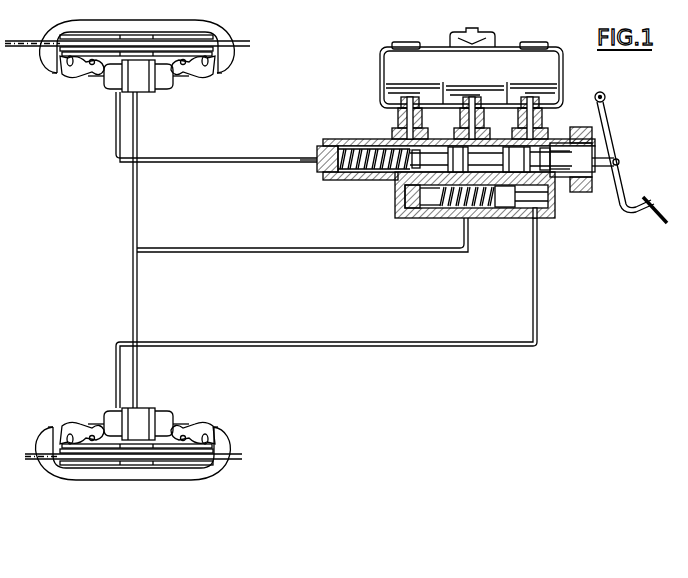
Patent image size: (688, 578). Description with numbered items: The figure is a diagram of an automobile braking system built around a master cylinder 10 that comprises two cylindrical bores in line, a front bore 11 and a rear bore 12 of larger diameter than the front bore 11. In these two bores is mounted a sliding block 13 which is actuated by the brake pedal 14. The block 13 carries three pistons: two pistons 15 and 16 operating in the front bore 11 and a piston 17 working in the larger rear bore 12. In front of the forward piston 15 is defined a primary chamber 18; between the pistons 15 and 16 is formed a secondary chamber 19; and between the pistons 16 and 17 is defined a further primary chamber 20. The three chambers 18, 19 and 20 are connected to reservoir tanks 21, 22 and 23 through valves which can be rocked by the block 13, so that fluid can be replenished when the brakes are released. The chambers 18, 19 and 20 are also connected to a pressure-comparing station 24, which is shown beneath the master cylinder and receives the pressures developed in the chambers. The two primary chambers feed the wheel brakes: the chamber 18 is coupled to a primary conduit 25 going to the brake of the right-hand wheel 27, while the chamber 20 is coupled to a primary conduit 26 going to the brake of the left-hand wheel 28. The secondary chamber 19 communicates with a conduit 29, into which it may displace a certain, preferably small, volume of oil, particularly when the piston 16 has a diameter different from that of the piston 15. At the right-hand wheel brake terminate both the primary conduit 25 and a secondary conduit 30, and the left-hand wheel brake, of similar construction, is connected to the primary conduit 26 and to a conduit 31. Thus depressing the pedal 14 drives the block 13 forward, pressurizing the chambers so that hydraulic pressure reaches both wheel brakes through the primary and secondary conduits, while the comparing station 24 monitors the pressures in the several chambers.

The master cylinder 10 is at (333, 140).
The front bore 11 is at (352, 180).
The rear bore 12 is at (557, 185).
The sliding block 13 is at (598, 178).
The brake pedal 14 is at (646, 203).
The forward piston 15 is at (456, 147).
The piston 16 is at (514, 147).
The piston 17 is at (585, 150).
The primary chamber 18 is at (378, 180).
The secondary chamber 19 is at (492, 192).
The further primary chamber 20 is at (553, 207).
The tank 21 is at (421, 80).
The tank 22 is at (487, 80).
The tank 23 is at (550, 80).
The pressure-comparing station 24 is at (432, 220).
The primary conduit 25 is at (116, 138).
The primary conduit 26 is at (116, 358).
The right-hand wheel 27 is at (218, 26).
The left-hand wheel 28 is at (210, 484).
The conduit 29 is at (203, 243).
The secondary conduit 30 is at (137, 138).
The conduit 31 is at (137, 362).